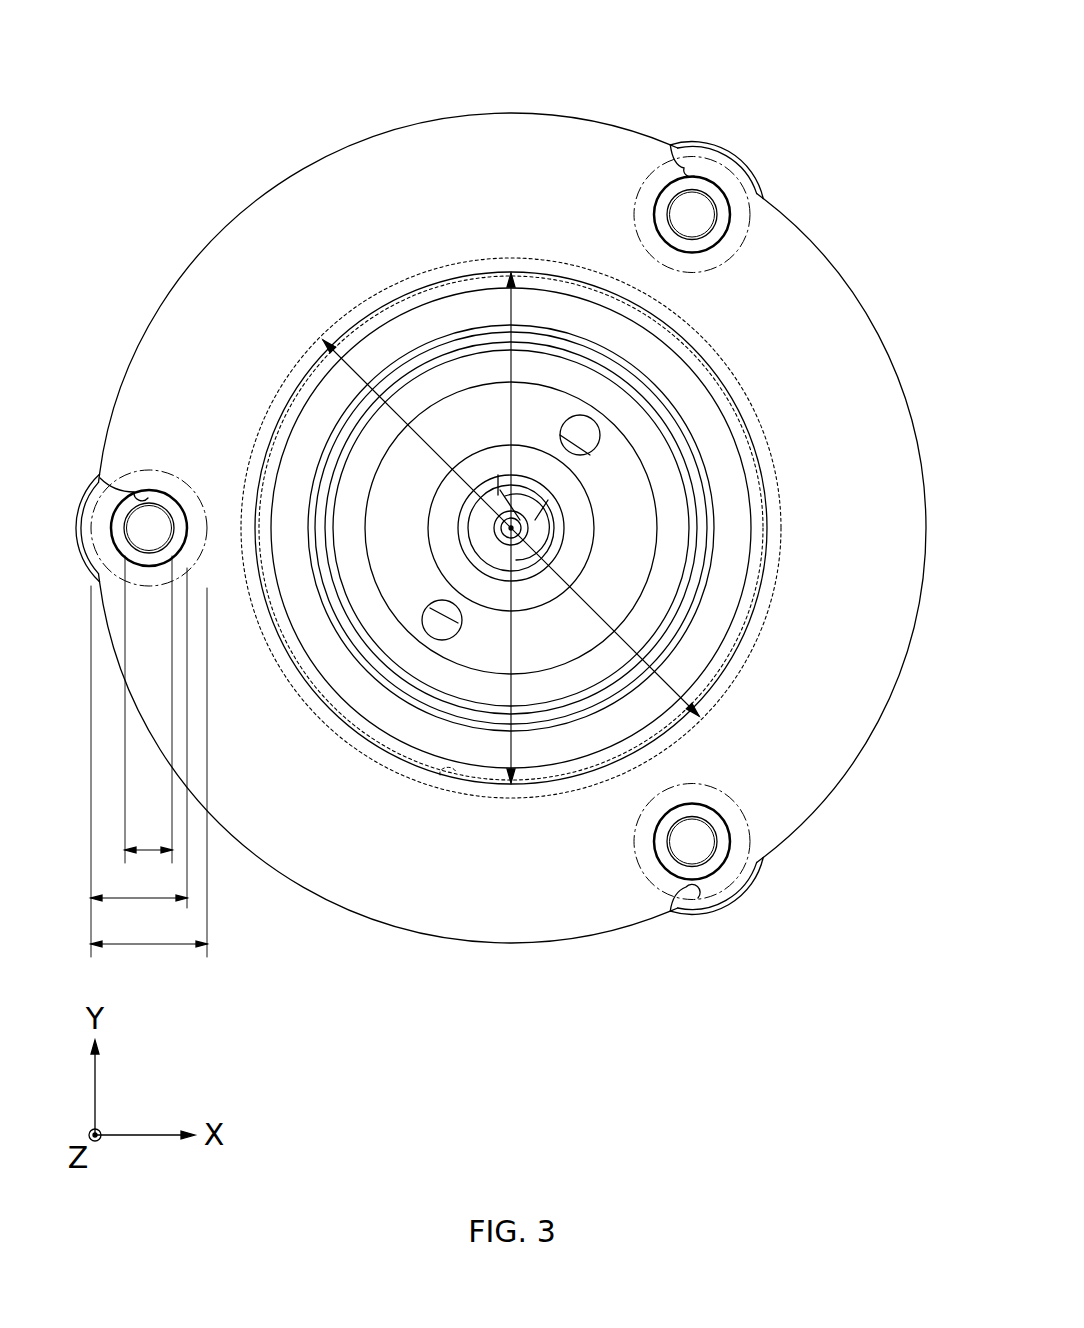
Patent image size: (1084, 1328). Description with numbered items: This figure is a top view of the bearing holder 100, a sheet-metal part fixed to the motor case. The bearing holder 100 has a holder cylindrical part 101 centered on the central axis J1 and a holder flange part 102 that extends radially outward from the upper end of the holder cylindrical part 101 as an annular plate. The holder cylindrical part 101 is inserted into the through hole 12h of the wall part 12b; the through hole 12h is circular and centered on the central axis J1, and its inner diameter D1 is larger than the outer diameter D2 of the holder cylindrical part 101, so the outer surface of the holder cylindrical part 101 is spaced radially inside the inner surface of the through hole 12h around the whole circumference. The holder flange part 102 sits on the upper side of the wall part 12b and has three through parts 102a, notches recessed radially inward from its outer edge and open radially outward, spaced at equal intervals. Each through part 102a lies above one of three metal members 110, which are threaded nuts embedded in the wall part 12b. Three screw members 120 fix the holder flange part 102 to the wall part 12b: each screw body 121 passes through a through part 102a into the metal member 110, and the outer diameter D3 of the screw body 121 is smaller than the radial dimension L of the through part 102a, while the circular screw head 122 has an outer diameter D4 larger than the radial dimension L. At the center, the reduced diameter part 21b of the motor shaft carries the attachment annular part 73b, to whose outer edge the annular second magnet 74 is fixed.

The bearing holder 100 is at (570, 105).
The holder flange part 102 is at (475, 127).
The through part 102a is at (145, 494).
The metal member 110 is at (95, 480).
The screw member 120 is at (211, 488).
The screw body 121 is at (173, 504).
The screw head 122 is at (187, 494).
The wall part 12b is at (200, 215).
The through hole 12h is at (463, 775).
The holder cylindrical part 101 is at (415, 763).
The attachment annular part 73b is at (618, 467).
The second magnet 74 is at (718, 452).
The reduced diameter part 21b is at (538, 538).
The central axis J1 is at (532, 516).
The inner diameter of the through hole D1 is at (597, 608).
The outer diameter of the holder cylindrical part D2 is at (513, 638).
The outer diameter of the screw body D3 is at (148, 831).
The outer diameter of the screw head D4 is at (149, 926).
The radial dimension of the through part L is at (139, 881).